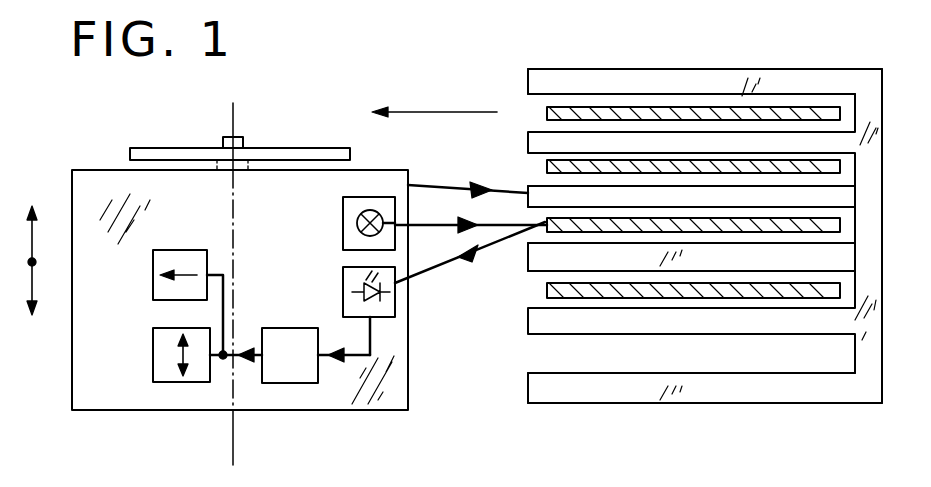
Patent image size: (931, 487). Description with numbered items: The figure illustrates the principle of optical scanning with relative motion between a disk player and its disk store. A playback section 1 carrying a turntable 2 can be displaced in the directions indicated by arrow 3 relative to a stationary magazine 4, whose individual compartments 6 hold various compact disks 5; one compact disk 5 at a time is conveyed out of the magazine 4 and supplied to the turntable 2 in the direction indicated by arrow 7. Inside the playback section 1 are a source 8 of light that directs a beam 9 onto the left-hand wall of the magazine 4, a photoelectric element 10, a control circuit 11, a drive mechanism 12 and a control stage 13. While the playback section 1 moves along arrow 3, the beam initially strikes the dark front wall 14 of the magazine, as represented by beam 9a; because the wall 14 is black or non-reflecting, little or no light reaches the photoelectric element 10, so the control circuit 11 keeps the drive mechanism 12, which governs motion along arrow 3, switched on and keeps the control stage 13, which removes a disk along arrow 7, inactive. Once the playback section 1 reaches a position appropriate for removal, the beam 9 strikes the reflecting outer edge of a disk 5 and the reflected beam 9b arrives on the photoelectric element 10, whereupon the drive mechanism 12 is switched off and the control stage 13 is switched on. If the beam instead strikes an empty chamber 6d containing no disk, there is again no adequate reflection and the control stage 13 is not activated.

The playback section 1 is at (90, 188).
The turntable 2 is at (182, 148).
The arrow 3 is at (31, 244).
The magazine 4 is at (710, 80).
The compact disk 5 is at (547, 112).
The compartment 6 is at (620, 94).
The chamber 6d is at (802, 360).
The arrow 7 is at (434, 98).
The source of light 8 is at (343, 207).
The beam of light 9 is at (434, 223).
The beam 9a is at (425, 185).
The reflected beam 9b is at (445, 266).
The photoelectric element 10 is at (343, 282).
The control circuit 11 is at (271, 328).
The drive mechanism 12 is at (152, 352).
The control stage 13 is at (152, 258).
The front wall 14 is at (528, 190).